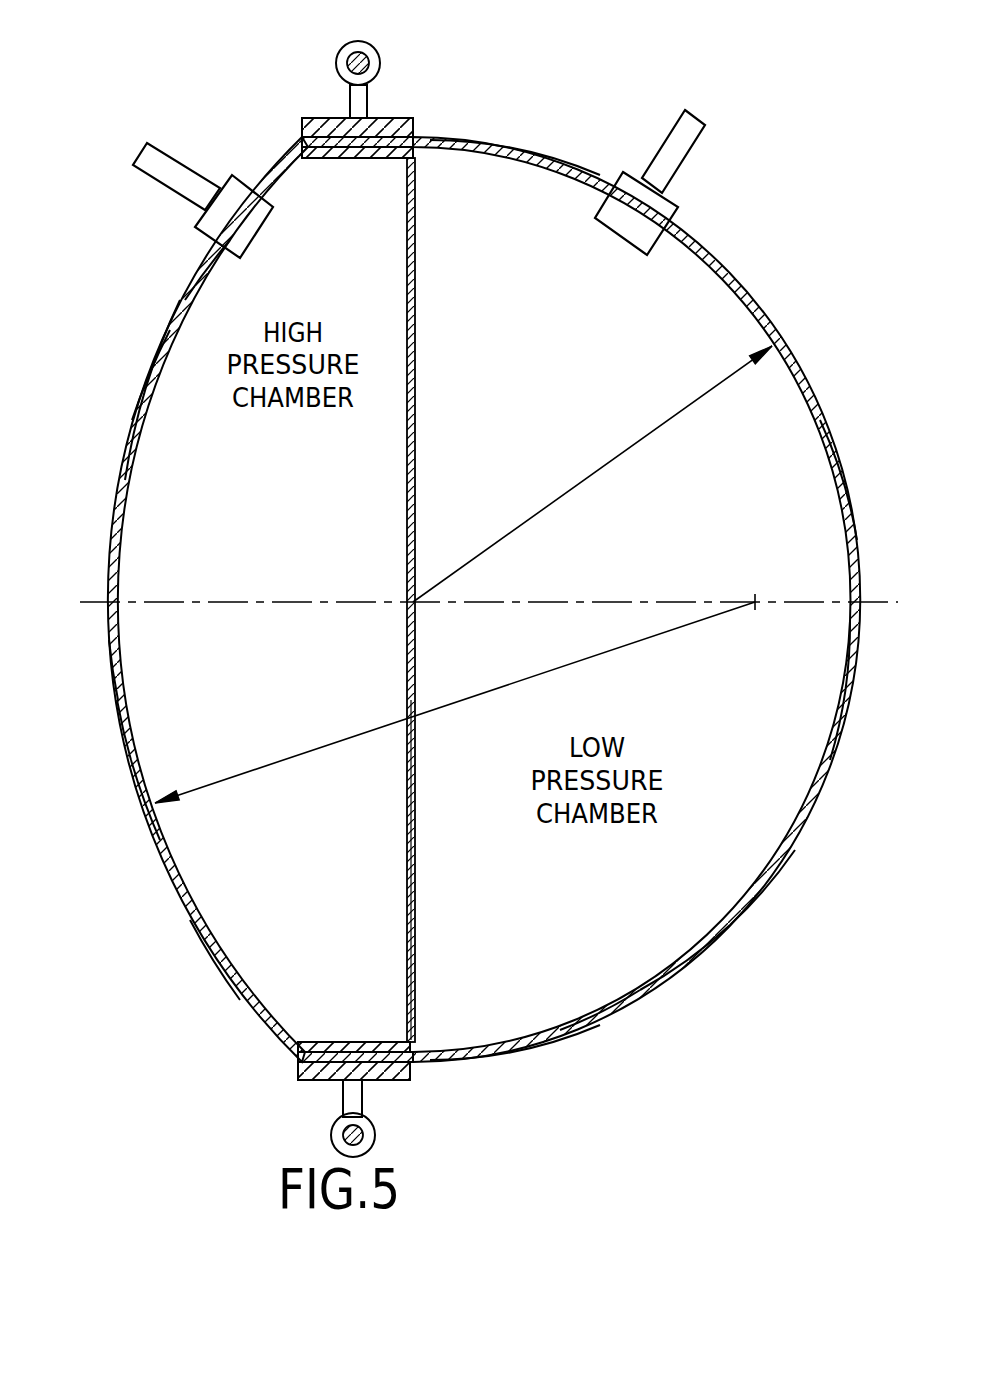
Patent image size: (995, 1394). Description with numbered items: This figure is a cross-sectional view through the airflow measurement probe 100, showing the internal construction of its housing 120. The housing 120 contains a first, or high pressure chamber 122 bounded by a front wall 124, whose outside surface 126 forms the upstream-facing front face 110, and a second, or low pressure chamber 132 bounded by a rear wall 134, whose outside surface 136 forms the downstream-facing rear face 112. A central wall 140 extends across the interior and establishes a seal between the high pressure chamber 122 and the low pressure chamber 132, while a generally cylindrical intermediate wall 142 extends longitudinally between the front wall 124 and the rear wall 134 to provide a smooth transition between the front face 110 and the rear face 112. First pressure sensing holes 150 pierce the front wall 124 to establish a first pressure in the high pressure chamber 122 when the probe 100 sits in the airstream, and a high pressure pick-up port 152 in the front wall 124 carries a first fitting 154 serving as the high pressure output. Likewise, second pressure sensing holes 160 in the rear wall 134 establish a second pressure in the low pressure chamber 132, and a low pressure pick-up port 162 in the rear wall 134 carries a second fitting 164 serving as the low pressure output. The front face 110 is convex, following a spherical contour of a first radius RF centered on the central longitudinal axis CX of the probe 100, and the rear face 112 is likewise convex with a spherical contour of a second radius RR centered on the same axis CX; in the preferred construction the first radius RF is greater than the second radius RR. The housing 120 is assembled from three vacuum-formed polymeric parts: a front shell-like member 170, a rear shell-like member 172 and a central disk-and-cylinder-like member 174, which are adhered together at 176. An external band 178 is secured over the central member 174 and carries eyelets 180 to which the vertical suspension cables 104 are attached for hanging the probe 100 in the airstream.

The probe 100 is at (448, 568).
The vertical suspension cables 104 is at (347, 58).
The front face 110 is at (118, 490).
The rear face 112 is at (806, 382).
The housing 120 is at (740, 280).
The high pressure chamber 122 is at (138, 662).
The front wall 124 is at (123, 730).
The outside surface 126 is at (152, 833).
The low pressure chamber 132 is at (627, 983).
The rear wall 134 is at (712, 935).
The outside surface 136 is at (762, 878).
The central wall 140 is at (415, 382).
The intermediate wall 142 is at (343, 1040).
The first pressure sensing holes 150 is at (192, 285).
The high pressure pick-up port 152 is at (237, 208).
The first fitting 154 is at (163, 190).
The second pressure sensing holes 160 is at (517, 158).
The low pressure pick-up port 162 is at (640, 212).
The second fitting 164 is at (692, 150).
The front shell-like member 170 is at (148, 432).
The rear shell-like member 172 is at (848, 672).
The central disk-and-cylinder-like member 174 is at (408, 845).
The adhered joints 176 is at (345, 158).
The external band 178 is at (413, 120).
The eyelets 180 is at (348, 43).
The second radius RR is at (593, 470).
The first radius RF is at (348, 735).
The central longitudinal axis CX is at (752, 599).